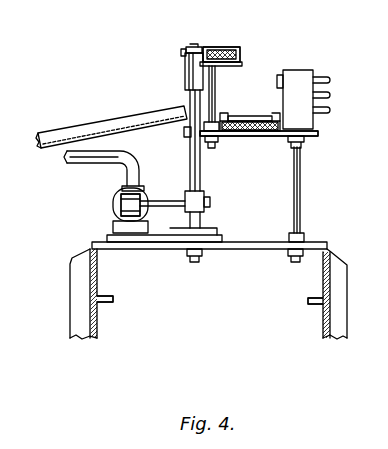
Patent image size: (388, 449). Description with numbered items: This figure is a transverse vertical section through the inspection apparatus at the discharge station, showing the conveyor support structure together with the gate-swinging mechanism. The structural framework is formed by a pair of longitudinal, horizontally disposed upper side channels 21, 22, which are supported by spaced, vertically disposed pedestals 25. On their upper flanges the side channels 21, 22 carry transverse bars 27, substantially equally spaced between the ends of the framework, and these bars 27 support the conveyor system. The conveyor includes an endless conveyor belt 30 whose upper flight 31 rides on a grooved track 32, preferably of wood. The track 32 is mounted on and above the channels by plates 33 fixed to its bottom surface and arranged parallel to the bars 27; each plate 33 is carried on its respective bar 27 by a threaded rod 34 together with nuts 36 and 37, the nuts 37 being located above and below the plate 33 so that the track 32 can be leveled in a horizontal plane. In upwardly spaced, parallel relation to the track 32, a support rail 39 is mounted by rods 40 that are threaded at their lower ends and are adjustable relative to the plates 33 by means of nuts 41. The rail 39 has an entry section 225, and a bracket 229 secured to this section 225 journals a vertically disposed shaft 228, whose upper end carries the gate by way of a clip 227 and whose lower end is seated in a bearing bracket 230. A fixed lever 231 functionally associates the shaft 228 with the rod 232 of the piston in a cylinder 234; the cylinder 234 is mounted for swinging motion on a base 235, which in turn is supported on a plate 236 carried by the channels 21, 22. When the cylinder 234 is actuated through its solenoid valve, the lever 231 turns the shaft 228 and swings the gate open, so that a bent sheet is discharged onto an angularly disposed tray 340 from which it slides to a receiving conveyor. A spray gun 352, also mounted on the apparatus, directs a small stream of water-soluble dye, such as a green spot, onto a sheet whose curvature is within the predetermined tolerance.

The upper side channel 21 is at (325, 279).
The upper side channel 22 is at (92, 271).
The pedestal 25 is at (80, 306).
The transverse bar 27 is at (209, 264).
The endless conveyor belt 30 is at (244, 112).
The upper flight 31 is at (262, 117).
The grooved track 32 is at (244, 137).
The plate 33 is at (268, 137).
The threaded rod 34 is at (301, 190).
The nut 36 is at (300, 238).
The nut 37 is at (300, 141).
The support rail 39 is at (225, 42).
The rod 40 is at (216, 92).
The nut 41 is at (213, 146).
The entry section 225 is at (236, 50).
The clip 227 is at (183, 51).
The shaft 228 is at (201, 178).
The bracket 229 is at (186, 75).
The bearing bracket 230 is at (201, 222).
The fixed lever 231 is at (161, 203).
The rod 232 is at (114, 192).
The cylinder 234 is at (117, 205).
The base 235 is at (120, 228).
The plate 236 is at (143, 238).
The tray 340 is at (88, 137).
The spray gun 352 is at (297, 96).